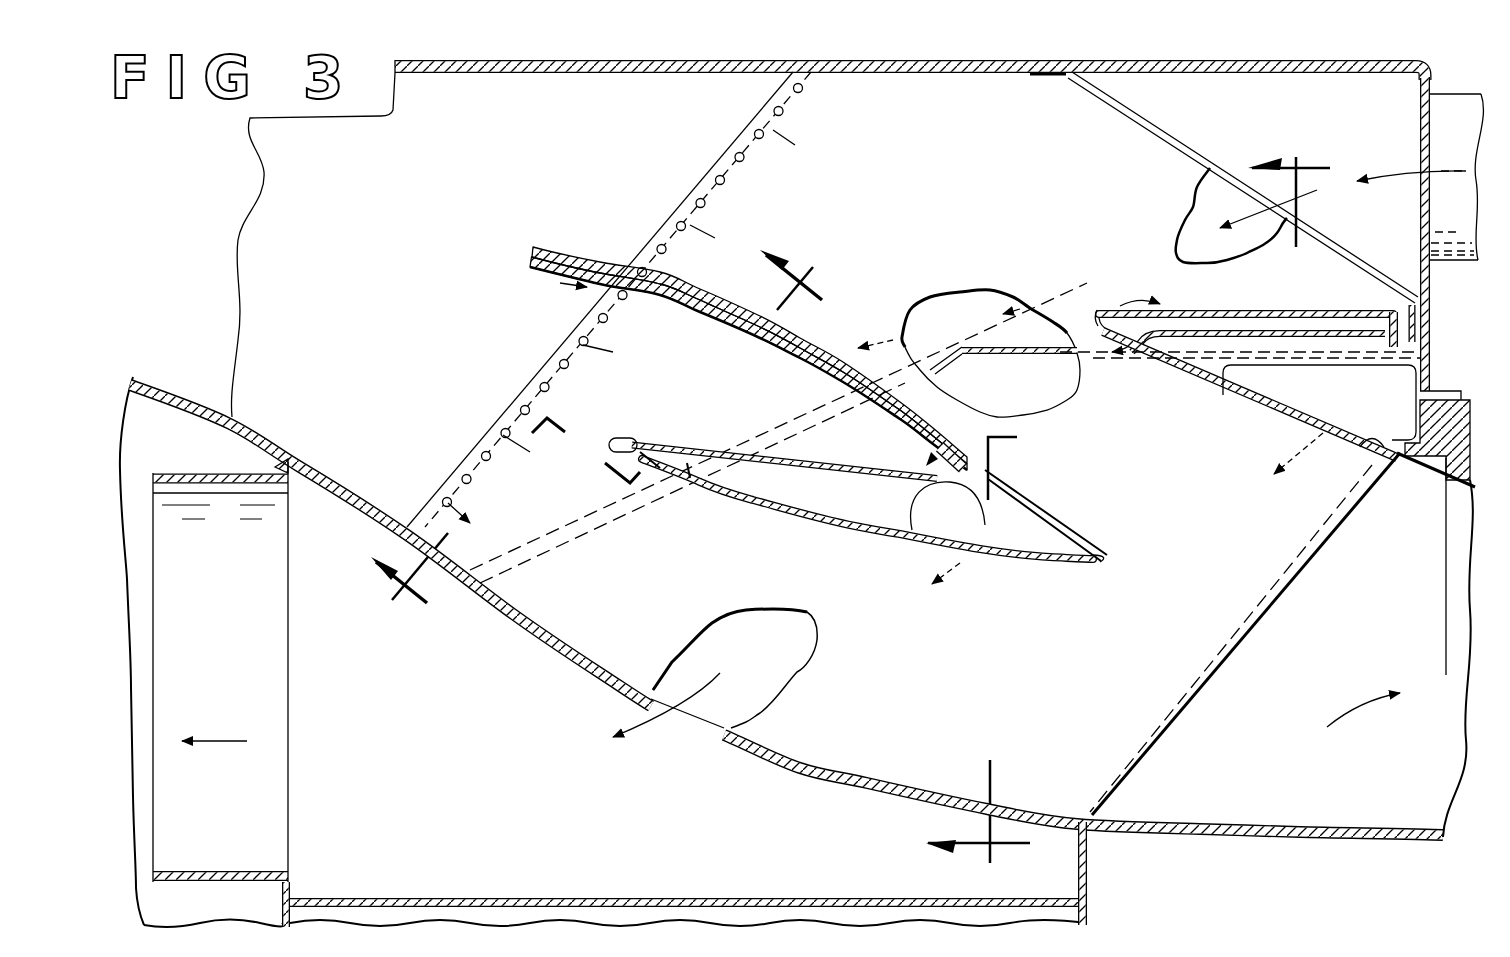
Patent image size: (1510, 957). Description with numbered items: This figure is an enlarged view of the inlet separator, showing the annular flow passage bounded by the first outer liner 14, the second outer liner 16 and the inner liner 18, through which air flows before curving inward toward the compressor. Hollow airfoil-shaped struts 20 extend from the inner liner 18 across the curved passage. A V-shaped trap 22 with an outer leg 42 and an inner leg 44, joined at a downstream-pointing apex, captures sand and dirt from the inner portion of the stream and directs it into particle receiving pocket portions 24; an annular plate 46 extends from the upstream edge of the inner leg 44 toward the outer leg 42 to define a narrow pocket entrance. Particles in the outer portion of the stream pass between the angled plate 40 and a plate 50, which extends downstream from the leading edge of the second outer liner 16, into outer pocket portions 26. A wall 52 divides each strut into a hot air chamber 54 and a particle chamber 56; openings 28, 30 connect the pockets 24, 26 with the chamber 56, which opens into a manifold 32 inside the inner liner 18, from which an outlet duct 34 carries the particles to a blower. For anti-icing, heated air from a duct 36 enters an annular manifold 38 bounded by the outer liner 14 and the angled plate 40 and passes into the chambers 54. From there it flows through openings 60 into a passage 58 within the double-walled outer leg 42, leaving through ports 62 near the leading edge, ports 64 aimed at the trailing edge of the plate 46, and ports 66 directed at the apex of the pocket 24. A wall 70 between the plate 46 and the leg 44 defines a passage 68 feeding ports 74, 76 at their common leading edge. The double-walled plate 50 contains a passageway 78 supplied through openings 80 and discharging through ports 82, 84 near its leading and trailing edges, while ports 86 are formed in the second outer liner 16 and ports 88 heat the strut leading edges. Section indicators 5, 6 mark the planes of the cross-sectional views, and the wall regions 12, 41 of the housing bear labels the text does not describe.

The section line 5- 5 is at (583, 411).
The section line 6- 6 is at (1114, 502).
The housing side wall 12 is at (1389, 618).
The first outer liner 14 is at (605, 74).
The second outer liner 16 is at (1247, 398).
The inner liner 18 is at (313, 462).
The struts 20 is at (1223, 665).
The V-shaped trap 22 is at (609, 299).
The particle receiving pocket portions 24 is at (1020, 535).
The particle receiving pocket portions 26 is at (1362, 442).
The openings 28 is at (958, 483).
The openings 30 is at (1317, 366).
The manifold 32 is at (487, 900).
The outlet duct 34 is at (210, 873).
The duct 36 is at (1443, 94).
The annular manifold 38 is at (1298, 108).
The angled plate 40 is at (1103, 120).
The end wall 41 is at (1449, 239).
The outer trap leg 42 is at (748, 351).
The inner trap leg 44 is at (891, 542).
The annular plate 46 is at (734, 444).
The plate 50 is at (1246, 314).
The wall 52 is at (1053, 362).
The strut chamber 54 is at (939, 328).
The strut chamber 56 is at (1011, 386).
The hot air passage 58 is at (712, 318).
The openings 60 is at (672, 280).
The ports 62 is at (545, 270).
The ports 64 is at (928, 455).
The ports 66 is at (998, 473).
The hot air passage 68 is at (688, 470).
The wall 70 is at (720, 463).
The ports 74 is at (633, 441).
The ports 76 is at (623, 462).
The hot gas passageway 78 is at (1257, 320).
The openings 80 is at (1160, 308).
The ports 82 is at (1102, 357).
The ports 84 is at (1400, 320).
The ports 86 is at (1117, 322).
The ports 88 is at (727, 177).